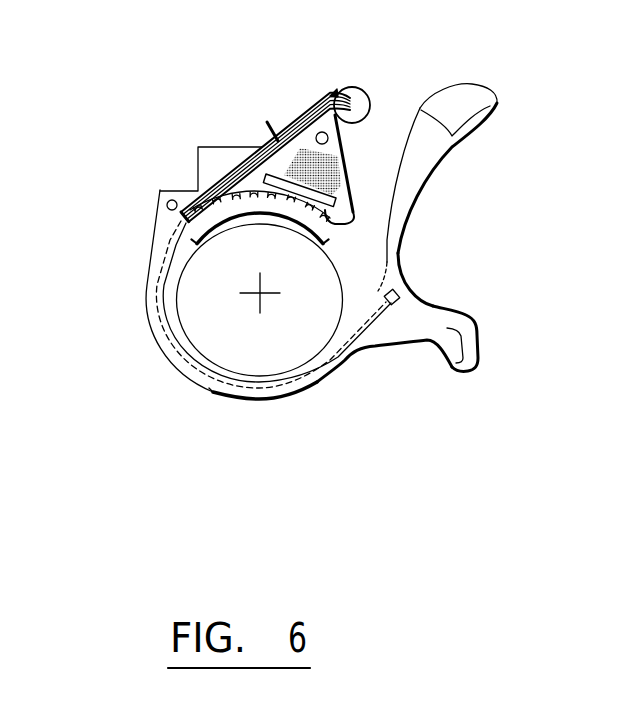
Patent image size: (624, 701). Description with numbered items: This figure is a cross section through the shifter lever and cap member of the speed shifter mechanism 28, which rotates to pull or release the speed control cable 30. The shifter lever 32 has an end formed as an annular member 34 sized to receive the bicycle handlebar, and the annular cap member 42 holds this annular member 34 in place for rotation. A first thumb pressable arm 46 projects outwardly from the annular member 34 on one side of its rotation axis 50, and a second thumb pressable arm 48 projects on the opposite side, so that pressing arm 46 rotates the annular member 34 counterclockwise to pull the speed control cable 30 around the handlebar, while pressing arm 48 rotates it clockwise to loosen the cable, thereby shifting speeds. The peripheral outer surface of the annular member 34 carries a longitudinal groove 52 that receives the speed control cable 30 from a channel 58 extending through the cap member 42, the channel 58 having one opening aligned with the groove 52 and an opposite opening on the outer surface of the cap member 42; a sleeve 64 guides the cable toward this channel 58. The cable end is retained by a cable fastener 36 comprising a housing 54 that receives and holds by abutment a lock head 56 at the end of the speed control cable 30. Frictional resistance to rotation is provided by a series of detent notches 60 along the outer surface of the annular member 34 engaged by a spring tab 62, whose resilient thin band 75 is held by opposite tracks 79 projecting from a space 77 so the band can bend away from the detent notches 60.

The speed shifter mechanism 28 is at (140, 372).
The speed control cable 30 is at (370, 337).
The shifter lever 32 is at (490, 350).
The annular member 34 is at (172, 258).
The cable fastener 36 is at (418, 289).
The annular cap member 42 is at (186, 190).
The first thumb pressable arm 46 is at (495, 96).
The second thumb pressable arm 48 is at (450, 364).
The rotation axis 50 is at (260, 295).
The longitudinal groove 52 is at (265, 118).
The housing 54 is at (403, 267).
The lock head 56 is at (401, 261).
The channel 58 is at (290, 124).
The detent notches 60 is at (263, 197).
The spring tab 62 is at (293, 199).
The sleeve 64 is at (352, 87).
The resilient thin band 75 is at (333, 188).
The space 77 is at (369, 116).
The tracks 79 is at (266, 142).